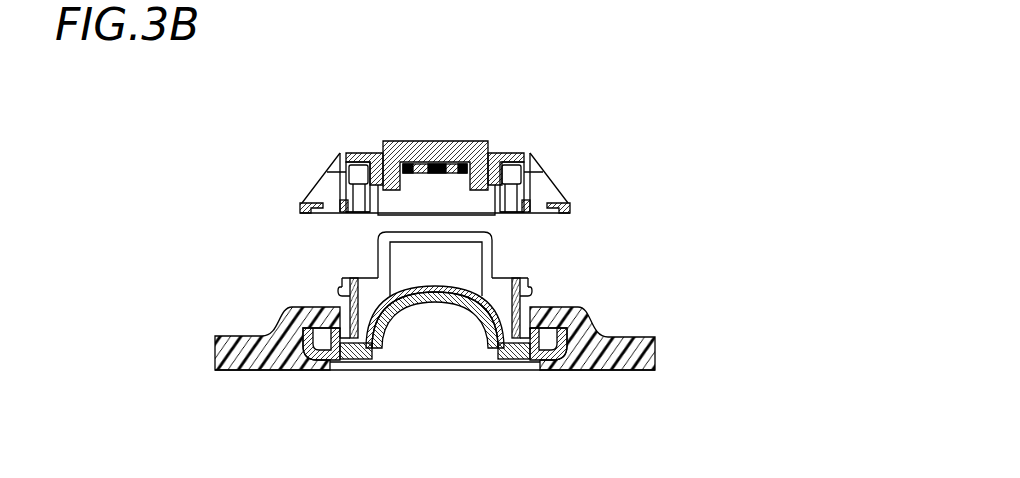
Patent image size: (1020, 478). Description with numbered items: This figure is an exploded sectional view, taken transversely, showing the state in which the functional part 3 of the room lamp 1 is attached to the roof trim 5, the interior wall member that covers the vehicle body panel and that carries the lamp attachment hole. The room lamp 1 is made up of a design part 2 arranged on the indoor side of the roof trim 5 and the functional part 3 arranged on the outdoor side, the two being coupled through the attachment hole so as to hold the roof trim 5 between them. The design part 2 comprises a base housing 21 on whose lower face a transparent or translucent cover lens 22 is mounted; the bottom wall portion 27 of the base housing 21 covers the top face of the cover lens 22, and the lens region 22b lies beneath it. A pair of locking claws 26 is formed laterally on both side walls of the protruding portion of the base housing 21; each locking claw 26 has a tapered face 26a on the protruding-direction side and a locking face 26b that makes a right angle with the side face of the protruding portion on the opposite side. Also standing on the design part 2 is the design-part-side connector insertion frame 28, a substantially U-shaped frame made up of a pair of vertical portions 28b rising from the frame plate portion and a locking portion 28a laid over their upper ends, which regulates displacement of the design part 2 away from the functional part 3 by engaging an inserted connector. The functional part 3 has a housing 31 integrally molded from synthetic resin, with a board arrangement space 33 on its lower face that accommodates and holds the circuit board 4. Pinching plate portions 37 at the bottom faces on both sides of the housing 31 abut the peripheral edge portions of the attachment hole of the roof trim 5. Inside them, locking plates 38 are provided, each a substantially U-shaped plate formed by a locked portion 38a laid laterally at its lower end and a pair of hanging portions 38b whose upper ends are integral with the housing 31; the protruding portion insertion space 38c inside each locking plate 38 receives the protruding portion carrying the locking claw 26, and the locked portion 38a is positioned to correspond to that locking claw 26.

The room lamp 1 is at (439, 253).
The design part 2 is at (497, 373).
The functional part 3 is at (439, 168).
The circuit board 4 is at (434, 124).
The roof trim 5 is at (232, 375).
The base housing 21 is at (308, 364).
The cover lens 22 is at (435, 375).
The edge portion of diaphragm 22b is at (397, 358).
The locking claw 26 is at (436, 278).
The tapered face 26a is at (345, 277).
The locking face 26b is at (344, 298).
The bottom wall portion 27 is at (427, 286).
The design-part-side connector insertion frame 28 is at (481, 265).
The locking portion 28a is at (445, 240).
The vertical portion 28b is at (470, 292).
The housing 31 is at (445, 141).
The board arrangement space 33 is at (423, 192).
The pinching plate portion 37 is at (313, 214).
The locking plate 38 is at (436, 190).
The locked portion 38a is at (345, 183).
The hanging portion 38b is at (327, 172).
The protruding portion insertion space 38c is at (362, 213).